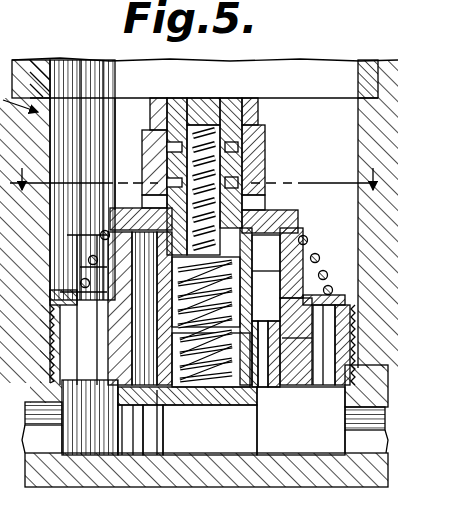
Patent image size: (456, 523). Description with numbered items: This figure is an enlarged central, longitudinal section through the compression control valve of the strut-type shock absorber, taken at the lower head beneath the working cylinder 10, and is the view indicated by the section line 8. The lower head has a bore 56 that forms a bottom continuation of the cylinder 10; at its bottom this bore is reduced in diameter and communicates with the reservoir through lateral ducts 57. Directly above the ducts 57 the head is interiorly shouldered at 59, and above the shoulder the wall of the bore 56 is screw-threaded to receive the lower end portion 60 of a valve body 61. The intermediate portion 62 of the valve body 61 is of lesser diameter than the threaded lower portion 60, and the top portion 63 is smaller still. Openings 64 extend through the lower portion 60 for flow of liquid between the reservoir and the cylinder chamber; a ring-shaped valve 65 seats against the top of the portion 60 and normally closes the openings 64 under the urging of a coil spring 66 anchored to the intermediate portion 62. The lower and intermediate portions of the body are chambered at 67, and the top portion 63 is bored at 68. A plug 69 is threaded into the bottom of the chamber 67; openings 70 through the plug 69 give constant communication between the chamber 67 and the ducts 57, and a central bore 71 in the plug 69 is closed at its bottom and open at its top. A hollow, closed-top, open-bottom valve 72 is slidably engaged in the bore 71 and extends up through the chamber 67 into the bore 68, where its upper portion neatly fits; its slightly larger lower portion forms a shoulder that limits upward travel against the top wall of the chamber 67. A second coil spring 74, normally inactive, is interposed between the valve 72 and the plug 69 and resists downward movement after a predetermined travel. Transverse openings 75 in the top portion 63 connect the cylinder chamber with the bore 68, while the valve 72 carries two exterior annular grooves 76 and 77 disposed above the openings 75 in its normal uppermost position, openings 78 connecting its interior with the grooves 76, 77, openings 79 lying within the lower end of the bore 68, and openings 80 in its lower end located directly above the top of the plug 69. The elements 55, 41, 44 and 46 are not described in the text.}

The section line 8- 8 is at (200, 182).
The working cylinder 10 is at (46, 64).
The threaded sleeve 55 is at (50, 386).
The bore 56 is at (313, 103).
The lateral ducts 57 is at (40, 440).
The shoulder 59 is at (346, 400).
The lower end portion 60 is at (26, 418).
The valve body 61 is at (292, 218).
The intermediate portion 62 is at (305, 224).
The top portion 63 is at (258, 138).
The openings 64 is at (313, 388).
The valve 65 is at (98, 258).
The coil spring 66 is at (323, 260).
The chamber 67 is at (312, 285).
The bore 68 is at (265, 98).
The plug 69 is at (254, 421).
The openings 70 is at (145, 445).
The central bore 71 is at (162, 497).
The valve 72 is at (305, 265).
The second coil spring 74 is at (315, 322).
The transverse openings 75 is at (165, 160).
The annular groove 76 is at (165, 185).
The annular groove 77 is at (167, 147).
The openings 78 is at (258, 148).
The openings 79 is at (112, 230).
The openings 80 is at (70, 290).
The wall 41 is at (40, 330).
The flange 44 is at (40, 355).
The ring 46 is at (40, 302).